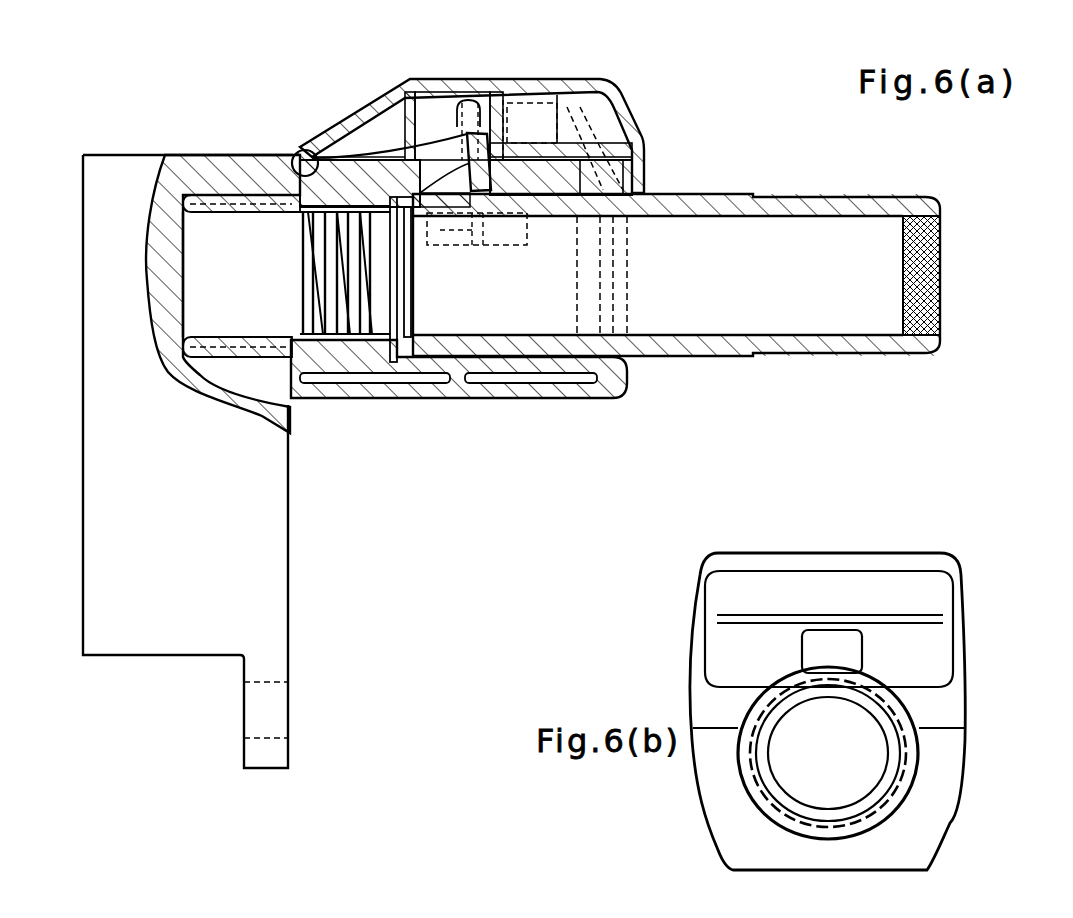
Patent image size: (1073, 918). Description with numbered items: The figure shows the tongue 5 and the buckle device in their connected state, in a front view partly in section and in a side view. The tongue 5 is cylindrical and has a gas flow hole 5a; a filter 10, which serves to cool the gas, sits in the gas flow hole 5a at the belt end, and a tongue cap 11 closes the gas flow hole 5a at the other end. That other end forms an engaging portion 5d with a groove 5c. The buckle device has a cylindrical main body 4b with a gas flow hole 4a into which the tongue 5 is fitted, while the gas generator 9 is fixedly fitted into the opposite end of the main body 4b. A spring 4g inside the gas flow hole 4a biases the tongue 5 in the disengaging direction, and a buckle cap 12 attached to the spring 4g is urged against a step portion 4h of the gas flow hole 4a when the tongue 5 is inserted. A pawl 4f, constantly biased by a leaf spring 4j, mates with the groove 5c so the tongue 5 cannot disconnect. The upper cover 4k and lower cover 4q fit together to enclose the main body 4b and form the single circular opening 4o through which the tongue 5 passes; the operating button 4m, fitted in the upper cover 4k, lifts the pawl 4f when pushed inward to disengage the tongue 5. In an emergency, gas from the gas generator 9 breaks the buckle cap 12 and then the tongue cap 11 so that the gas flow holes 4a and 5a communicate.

In FIG. 6A, the gas flow hole 4a is at (252, 309).
In FIG. 6A, the buckle main body 4b is at (338, 135).
In FIG. 6A, the pawl 4f is at (471, 100).
In FIG. 6A, the spring 4g is at (290, 330).
In FIG. 6A, the step portion 4h is at (402, 398).
In FIG. 6A, the spring 4j is at (447, 138).
In FIG. 6A, the upper cover 4k is at (372, 92).
In FIG. 6B, the upper cover 4k is at (882, 560).
In FIG. 6A, the operating button 4m is at (644, 125).
In FIG. 6B, the operating button 4m is at (937, 607).
In FIG. 6A, the opening 4o is at (625, 215).
In FIG. 6A, the lower cover 4q is at (459, 409).
In FIG. 6B, the lower cover 4q is at (928, 822).
In FIG. 6A, the tongue 5 is at (718, 336).
In FIG. 6B, the tongue 5 is at (877, 753).
In FIG. 6A, the gas flow hole 5a is at (787, 309).
In FIG. 6B, the gas flow hole 5a is at (845, 768).
In FIG. 6A, the groove 5c is at (480, 245).
In FIG. 6A, the engaging portion 5d is at (543, 200).
In FIG. 6B, the engaging portion 5d is at (853, 647).
In FIG. 6A, the gas generator 9 is at (275, 603).
In FIG. 6A, the filter 10 is at (945, 305).
In FIG. 6A, the tongue cap 11 is at (411, 285).
In FIG. 6A, the buckle cap 12 is at (396, 364).